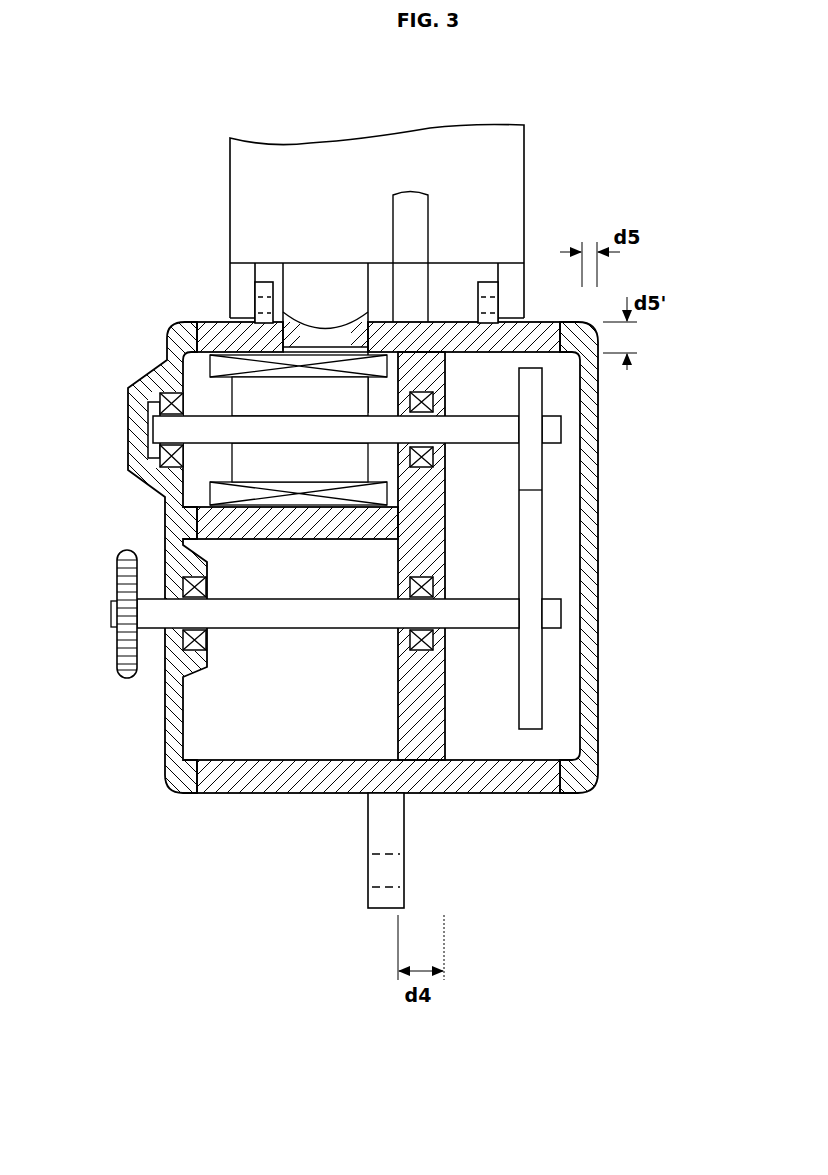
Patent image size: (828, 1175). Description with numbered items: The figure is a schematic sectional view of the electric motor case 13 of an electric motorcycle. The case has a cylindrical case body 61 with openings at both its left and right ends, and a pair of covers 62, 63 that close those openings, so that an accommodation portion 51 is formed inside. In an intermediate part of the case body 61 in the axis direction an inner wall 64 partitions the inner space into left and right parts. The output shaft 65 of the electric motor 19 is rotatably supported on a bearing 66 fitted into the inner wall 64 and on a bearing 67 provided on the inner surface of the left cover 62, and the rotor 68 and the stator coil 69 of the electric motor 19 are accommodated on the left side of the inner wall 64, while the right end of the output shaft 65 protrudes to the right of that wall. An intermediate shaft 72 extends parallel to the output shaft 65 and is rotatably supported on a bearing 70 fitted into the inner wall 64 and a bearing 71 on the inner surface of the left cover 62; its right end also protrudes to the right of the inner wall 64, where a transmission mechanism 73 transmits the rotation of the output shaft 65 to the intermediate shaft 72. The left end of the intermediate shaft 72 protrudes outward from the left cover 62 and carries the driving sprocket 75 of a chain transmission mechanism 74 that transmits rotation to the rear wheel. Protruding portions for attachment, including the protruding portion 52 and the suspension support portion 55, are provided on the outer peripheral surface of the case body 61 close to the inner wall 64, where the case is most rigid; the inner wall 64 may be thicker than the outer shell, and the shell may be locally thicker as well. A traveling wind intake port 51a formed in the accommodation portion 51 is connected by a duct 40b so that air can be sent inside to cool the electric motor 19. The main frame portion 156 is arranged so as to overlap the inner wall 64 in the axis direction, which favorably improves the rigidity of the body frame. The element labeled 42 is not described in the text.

The electric motor case 13 is at (594, 818).
The electric motor 19 is at (196, 378).
The duct 40b is at (328, 282).
The mounting plate 42 is at (240, 287).
The accommodation portion 51 is at (228, 793).
The traveling wind intake port 51a is at (265, 282).
The protruding portion 52 is at (270, 283).
The suspension support portion 55 is at (380, 910).
The case body 61 is at (300, 793).
The left cover 62 is at (167, 792).
The right cover 63 is at (566, 795).
The inner wall 64 is at (447, 723).
The output shaft 65 is at (561, 430).
The bearing 66 is at (435, 410).
The bearing 67 is at (150, 413).
The rotor 68 is at (335, 405).
The stator coil 69 is at (300, 358).
The bearing 70 is at (397, 632).
The bearing 71 is at (210, 635).
The intermediate shaft 72 is at (561, 614).
The transmission mechanism 73 is at (557, 520).
The chain transmission mechanism 74 is at (115, 686).
The driving sprocket 75 is at (120, 547).
The main frame portion 156 is at (435, 227).